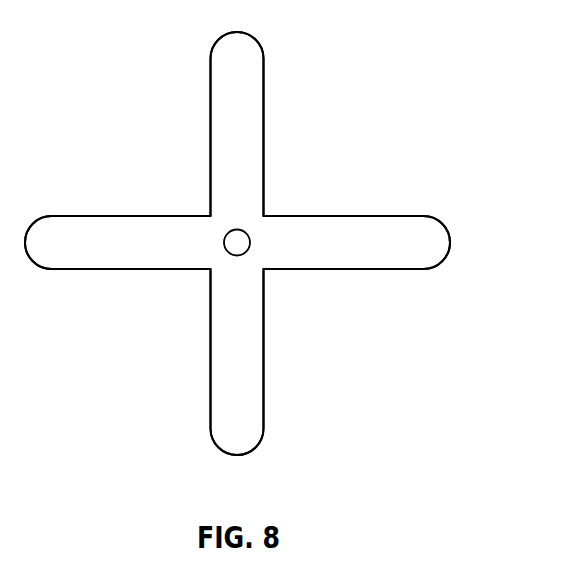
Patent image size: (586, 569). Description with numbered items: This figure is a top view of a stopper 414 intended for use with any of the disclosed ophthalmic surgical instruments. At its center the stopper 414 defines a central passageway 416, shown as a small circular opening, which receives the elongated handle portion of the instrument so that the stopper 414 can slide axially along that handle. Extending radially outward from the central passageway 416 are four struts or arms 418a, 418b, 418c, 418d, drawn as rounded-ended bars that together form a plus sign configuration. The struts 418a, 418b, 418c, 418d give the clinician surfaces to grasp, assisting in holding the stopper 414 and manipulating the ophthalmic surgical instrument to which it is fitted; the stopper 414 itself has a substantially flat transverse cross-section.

The stopper 414 is at (339, 73).
The central passageway 416 is at (246, 233).
The strut 418a is at (112, 238).
The strut 418b is at (425, 245).
The strut 418c is at (243, 138).
The strut 418d is at (263, 387).